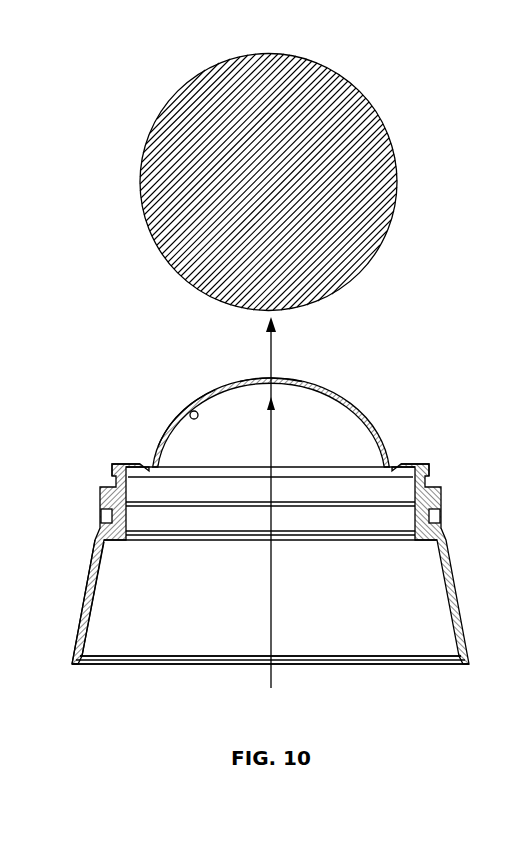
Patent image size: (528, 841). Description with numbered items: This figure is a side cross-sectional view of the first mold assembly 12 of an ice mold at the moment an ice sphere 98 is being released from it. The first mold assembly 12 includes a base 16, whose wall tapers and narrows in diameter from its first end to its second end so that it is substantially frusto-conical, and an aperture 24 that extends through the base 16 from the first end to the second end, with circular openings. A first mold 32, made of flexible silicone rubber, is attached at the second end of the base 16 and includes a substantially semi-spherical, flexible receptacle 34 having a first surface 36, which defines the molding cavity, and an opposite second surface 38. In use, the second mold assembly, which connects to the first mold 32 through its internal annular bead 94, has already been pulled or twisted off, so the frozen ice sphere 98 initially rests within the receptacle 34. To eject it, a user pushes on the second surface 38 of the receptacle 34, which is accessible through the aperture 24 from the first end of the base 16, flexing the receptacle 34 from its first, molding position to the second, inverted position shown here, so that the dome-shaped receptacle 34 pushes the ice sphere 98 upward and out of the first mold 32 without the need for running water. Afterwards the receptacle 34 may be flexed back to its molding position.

The first mold assembly 12 is at (464, 548).
The base 16 is at (86, 608).
The aperture 24 is at (176, 632).
The first mold 32 is at (427, 463).
The receptacle 34 is at (302, 382).
The first surface 36 is at (238, 381).
The second surface 38 is at (189, 412).
The internal annular bead 94 is at (106, 491).
The ice sphere 98 is at (385, 182).